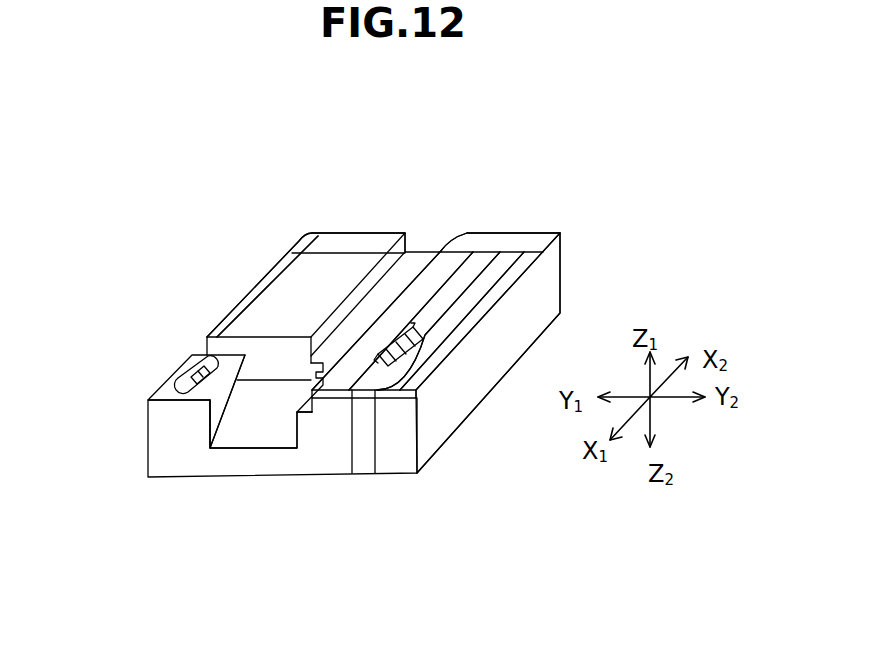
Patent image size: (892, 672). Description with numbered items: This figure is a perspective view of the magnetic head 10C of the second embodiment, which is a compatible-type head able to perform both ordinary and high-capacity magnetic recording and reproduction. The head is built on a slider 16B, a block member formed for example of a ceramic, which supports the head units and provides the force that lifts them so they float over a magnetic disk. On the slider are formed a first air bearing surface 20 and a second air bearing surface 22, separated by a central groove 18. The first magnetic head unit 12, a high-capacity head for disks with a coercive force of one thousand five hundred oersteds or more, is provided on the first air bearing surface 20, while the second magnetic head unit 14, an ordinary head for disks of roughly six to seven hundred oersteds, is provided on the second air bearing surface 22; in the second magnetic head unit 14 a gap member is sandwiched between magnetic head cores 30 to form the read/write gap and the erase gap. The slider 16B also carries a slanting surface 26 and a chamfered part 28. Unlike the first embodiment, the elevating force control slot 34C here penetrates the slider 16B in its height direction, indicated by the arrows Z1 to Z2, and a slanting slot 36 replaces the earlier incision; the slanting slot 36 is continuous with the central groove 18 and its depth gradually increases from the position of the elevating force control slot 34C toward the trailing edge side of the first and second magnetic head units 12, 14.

The magnetic head 10C is at (458, 121).
The first magnetic head unit 12 is at (196, 374).
The second magnetic head unit 14 is at (418, 353).
The slider 16B is at (447, 453).
The central groove 18 is at (421, 260).
The first air bearing surface 20 is at (300, 278).
The second air bearing surface 22 is at (450, 263).
The slanting surface 26 is at (354, 238).
The chamfered part 28 is at (245, 300).
The magnetic head cores 30 is at (363, 457).
The elevating force control slot 34C is at (207, 333).
The slanting slot 36 is at (255, 437).